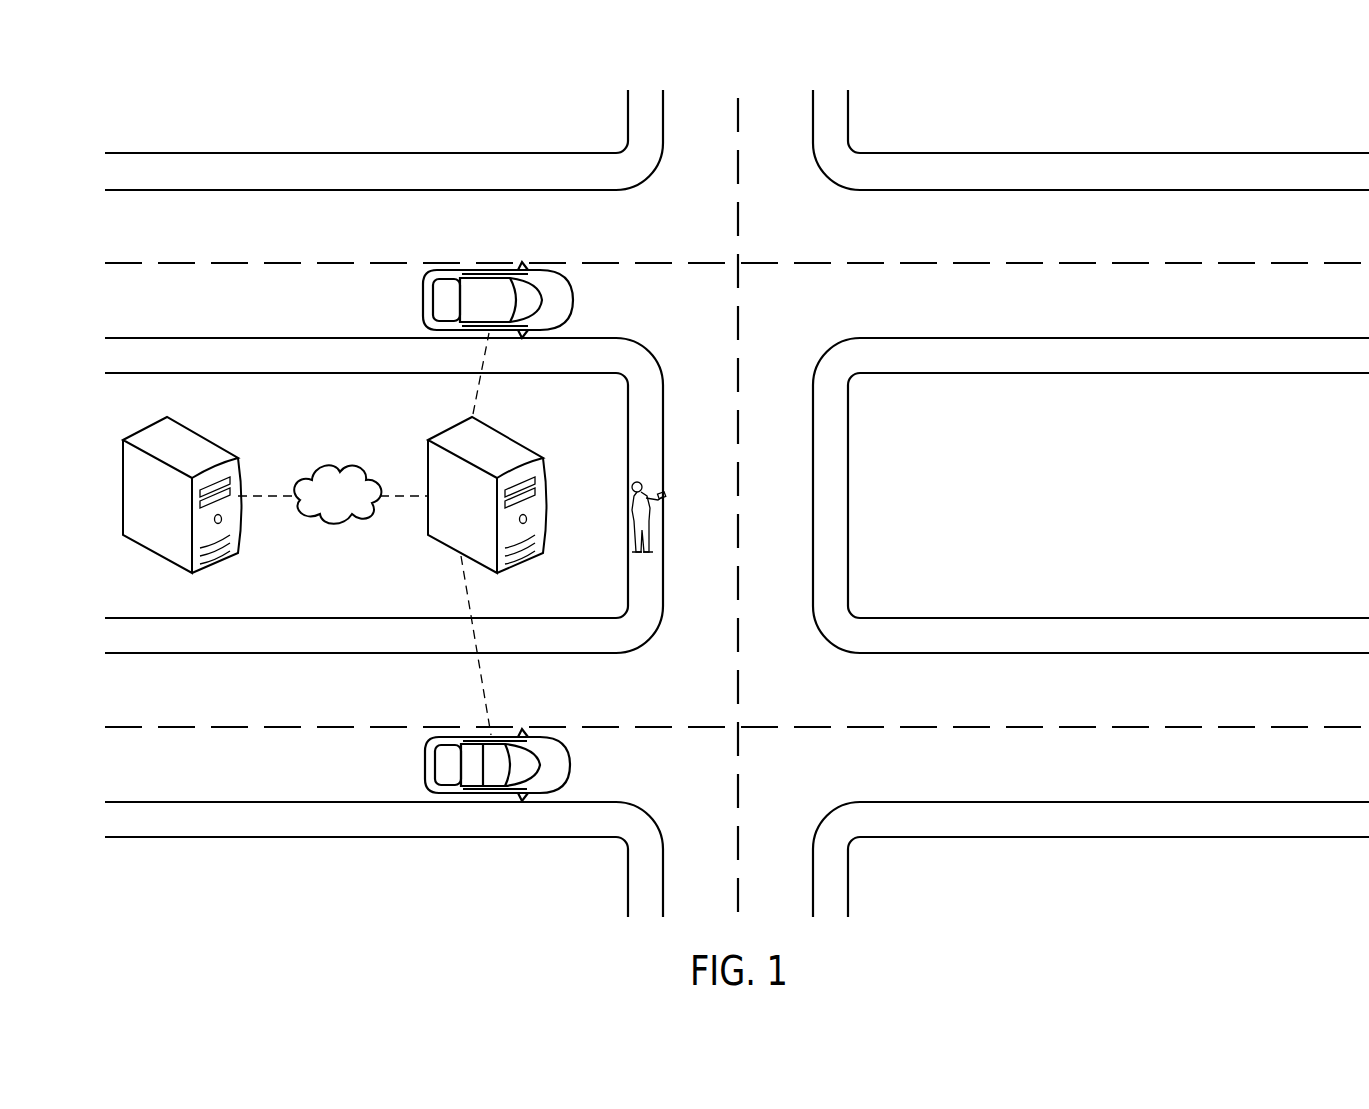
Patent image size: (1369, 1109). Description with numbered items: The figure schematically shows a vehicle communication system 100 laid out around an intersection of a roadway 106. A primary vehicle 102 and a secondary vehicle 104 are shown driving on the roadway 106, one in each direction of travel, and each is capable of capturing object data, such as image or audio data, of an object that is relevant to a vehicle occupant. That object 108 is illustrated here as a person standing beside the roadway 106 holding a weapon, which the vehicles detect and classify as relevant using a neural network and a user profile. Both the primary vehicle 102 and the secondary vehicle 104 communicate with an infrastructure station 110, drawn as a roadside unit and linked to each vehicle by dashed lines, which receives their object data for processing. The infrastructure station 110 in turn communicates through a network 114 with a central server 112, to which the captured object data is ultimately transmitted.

The vehicle communication system 100 is at (60, 110).
The primary vehicle 102 is at (455, 268).
The secondary vehicle 104 is at (570, 762).
The roadway 106 is at (1002, 338).
The object 108 is at (631, 501).
The infrastructure station 110 is at (508, 433).
The central server 112 is at (203, 433).
The network 114 is at (339, 468).